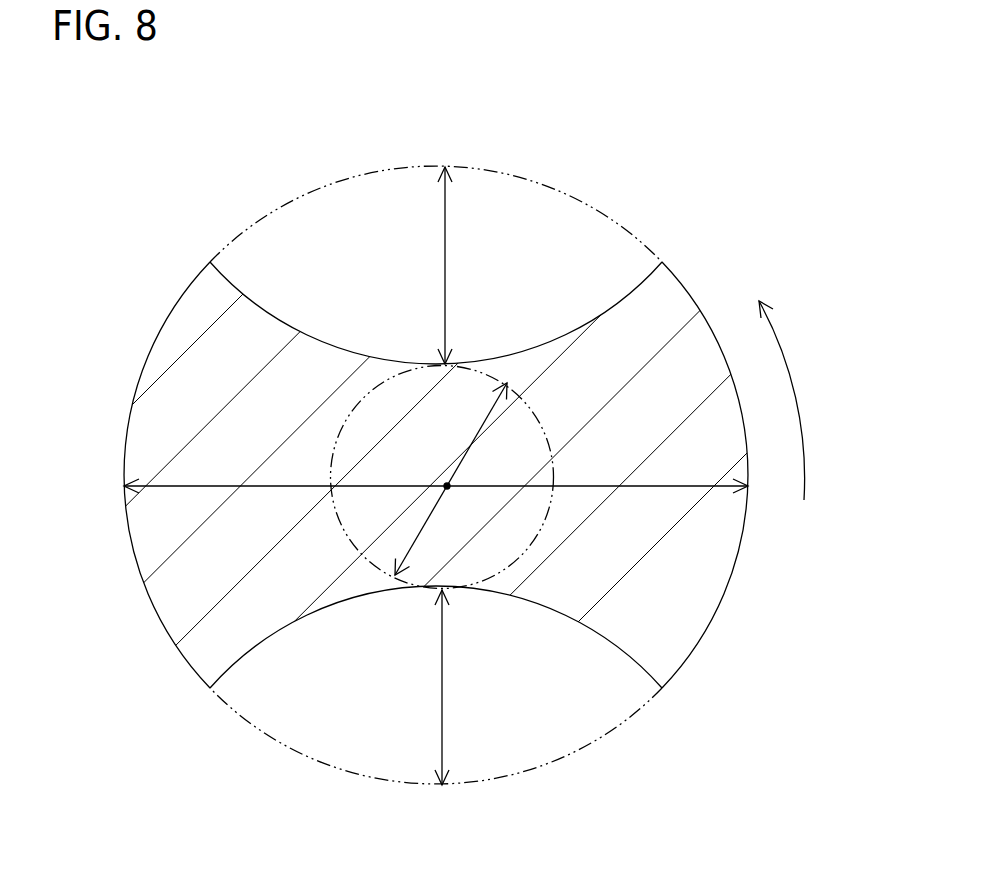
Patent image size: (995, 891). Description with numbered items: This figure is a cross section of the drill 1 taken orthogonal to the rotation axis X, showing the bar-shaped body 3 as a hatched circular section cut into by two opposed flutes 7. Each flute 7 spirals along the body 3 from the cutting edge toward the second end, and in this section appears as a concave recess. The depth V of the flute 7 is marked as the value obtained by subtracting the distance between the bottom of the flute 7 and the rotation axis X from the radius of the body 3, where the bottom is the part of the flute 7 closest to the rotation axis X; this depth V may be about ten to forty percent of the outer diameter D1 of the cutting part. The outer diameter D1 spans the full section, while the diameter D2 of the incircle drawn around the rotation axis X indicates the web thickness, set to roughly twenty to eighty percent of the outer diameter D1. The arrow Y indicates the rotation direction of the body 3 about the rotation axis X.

The drill 1 is at (279, 137).
The body 3 is at (697, 660).
The flute 7 is at (530, 349).
The outer diameter D1 is at (208, 486).
The diameter of an incircle D2 is at (475, 438).
The depth of the flute V is at (445, 278).
The rotation axis X is at (447, 486).
The rotation direction Y is at (802, 400).